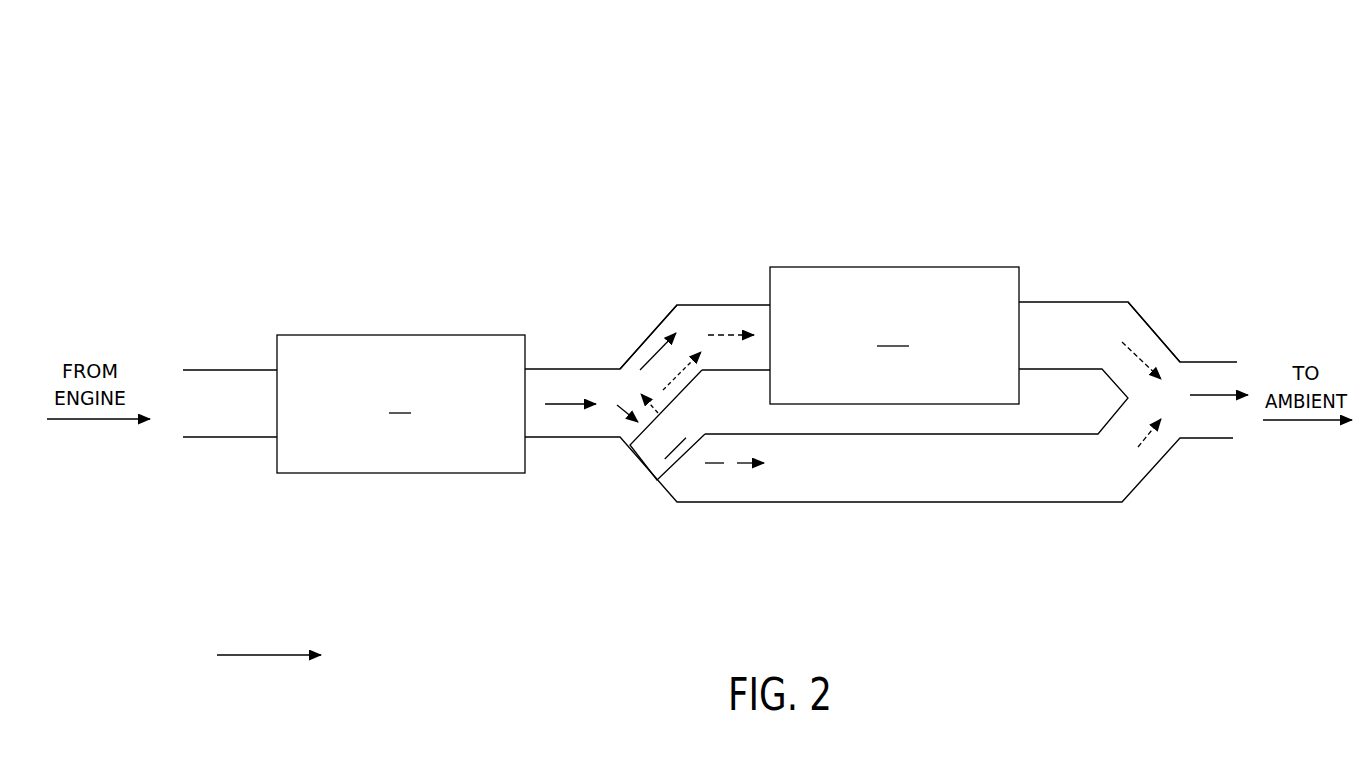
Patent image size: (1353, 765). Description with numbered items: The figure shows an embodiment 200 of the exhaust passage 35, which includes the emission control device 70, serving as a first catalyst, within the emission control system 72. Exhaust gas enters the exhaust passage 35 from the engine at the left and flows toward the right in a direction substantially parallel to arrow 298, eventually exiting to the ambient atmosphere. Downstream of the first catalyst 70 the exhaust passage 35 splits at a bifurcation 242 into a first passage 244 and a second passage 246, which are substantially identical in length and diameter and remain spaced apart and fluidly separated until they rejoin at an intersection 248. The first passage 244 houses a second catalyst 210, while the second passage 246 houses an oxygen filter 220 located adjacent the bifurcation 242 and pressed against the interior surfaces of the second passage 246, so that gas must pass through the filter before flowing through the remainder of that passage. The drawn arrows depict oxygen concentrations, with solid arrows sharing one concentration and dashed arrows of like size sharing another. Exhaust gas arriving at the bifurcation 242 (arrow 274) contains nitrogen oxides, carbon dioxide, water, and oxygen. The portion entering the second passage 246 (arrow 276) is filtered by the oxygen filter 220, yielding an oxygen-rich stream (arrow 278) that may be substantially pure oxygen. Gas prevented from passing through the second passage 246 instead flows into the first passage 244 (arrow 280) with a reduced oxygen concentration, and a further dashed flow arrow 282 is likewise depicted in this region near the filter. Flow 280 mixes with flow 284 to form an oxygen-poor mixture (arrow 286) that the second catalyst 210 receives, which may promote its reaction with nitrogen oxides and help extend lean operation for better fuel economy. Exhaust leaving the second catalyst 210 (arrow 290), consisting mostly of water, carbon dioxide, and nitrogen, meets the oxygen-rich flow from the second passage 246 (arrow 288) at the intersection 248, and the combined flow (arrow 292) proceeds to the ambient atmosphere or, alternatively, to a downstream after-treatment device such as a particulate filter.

The exhaust passage 35 is at (207, 377).
The emission control device (first catalyst) 70 is at (401, 404).
The emission control system 72 is at (1056, 232).
The exhaust passage embodiment 200 is at (1199, 66).
The second catalyst 210 is at (894, 335).
The oxygen filter 220 is at (667, 425).
The bifurcation 242 is at (609, 382).
The first passage 244 is at (703, 317).
The second passage 246 is at (702, 482).
The intersection 248 is at (1168, 392).
The exhaust gas flow arrow to bifurcation 274 is at (583, 406).
The exhaust gas flow arrow to second passage 276 is at (622, 412).
The oxygen-rich exhaust stream arrow 278 is at (723, 465).
The exhaust gas flow arrow into first passage 280 is at (653, 402).
The exhaust flow through valve to muffler 282 is at (681, 376).
The exhaust gas flow arrow in first passage 284 is at (655, 352).
The exhaust gas mixture arrow 286 is at (710, 338).
The exhaust flow arrow from second passage 288 is at (1135, 448).
The exhaust gas flow arrow downstream of second catalyst 290 is at (1140, 358).
The mixed exhaust flow arrow 292 is at (1213, 393).
The exhaust flow direction arrow 298 is at (268, 653).